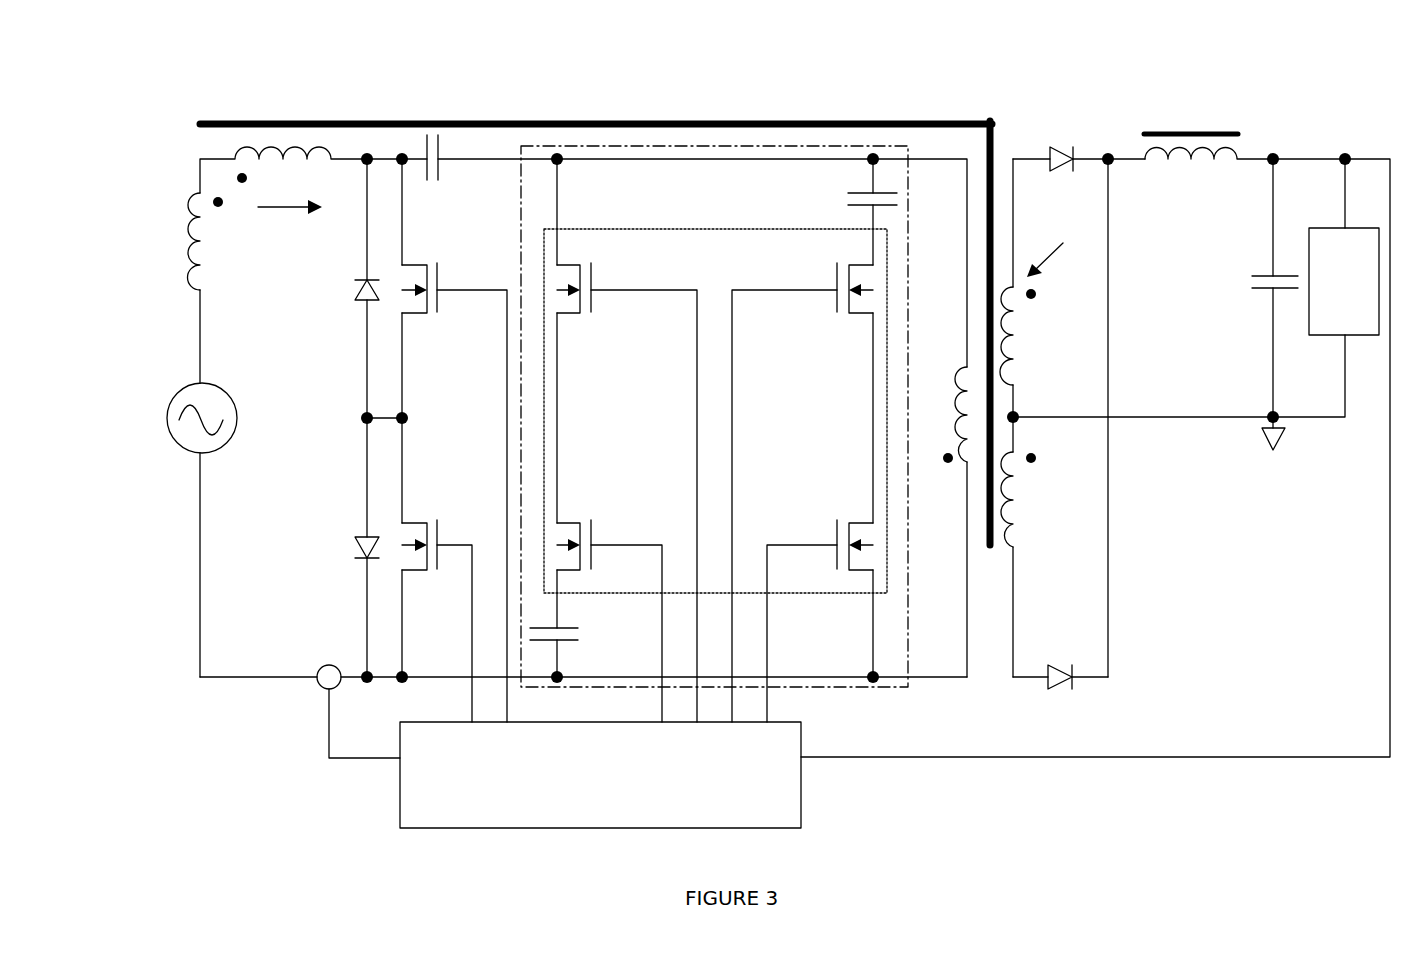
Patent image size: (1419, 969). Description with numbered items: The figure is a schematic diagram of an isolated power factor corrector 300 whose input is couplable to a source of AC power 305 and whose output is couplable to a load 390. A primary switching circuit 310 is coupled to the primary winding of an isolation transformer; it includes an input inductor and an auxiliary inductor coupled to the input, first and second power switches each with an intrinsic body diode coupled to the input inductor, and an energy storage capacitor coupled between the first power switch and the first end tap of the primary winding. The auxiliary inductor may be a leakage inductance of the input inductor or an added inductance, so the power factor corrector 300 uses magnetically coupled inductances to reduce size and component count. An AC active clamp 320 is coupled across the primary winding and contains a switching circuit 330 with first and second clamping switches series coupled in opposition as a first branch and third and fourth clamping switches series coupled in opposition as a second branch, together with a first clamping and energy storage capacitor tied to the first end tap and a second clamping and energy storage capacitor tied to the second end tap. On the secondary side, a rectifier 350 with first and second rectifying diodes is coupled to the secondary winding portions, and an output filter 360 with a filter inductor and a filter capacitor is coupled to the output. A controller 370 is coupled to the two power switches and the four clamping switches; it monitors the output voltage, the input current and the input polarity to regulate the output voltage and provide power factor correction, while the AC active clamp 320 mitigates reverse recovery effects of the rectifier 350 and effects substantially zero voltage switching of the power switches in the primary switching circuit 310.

The isolated power factor corrector 300 is at (138, 62).
The source of AC power 305 is at (210, 483).
The primary switching circuit 310 is at (450, 100).
The AC active clamp 320 is at (744, 416).
The switching circuit 330 is at (715, 475).
The rectifier 350 is at (1108, 100).
The output filter 360 is at (1298, 100).
The controller 370 is at (600, 775).
The load 390 is at (1326, 288).